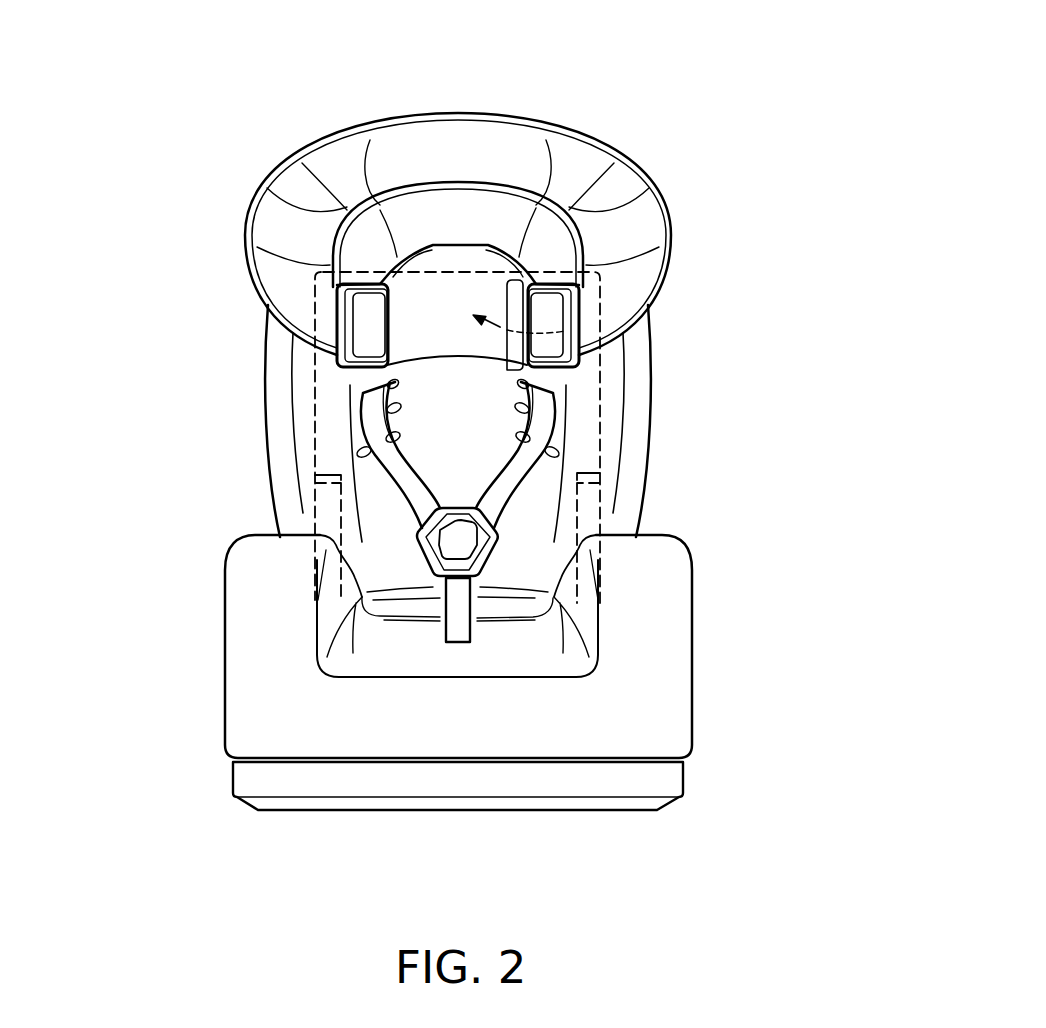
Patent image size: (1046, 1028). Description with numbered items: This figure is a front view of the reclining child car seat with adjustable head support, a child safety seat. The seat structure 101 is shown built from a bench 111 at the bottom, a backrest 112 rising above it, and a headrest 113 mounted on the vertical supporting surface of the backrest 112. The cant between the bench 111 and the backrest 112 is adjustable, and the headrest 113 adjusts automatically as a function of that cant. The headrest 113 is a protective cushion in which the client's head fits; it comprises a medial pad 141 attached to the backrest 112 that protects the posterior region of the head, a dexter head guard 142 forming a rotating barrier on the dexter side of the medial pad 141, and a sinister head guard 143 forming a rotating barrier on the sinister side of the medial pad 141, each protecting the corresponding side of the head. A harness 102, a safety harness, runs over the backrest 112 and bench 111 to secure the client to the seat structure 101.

The seat structure 101 is at (267, 450).
The harness 102 is at (443, 552).
The bench 111 is at (550, 636).
The backrest 112 is at (582, 425).
The headrest 113 is at (445, 203).
The medial pad 141 is at (475, 262).
The dexter head guard 142 is at (368, 330).
The sinister head guard 143 is at (560, 313).